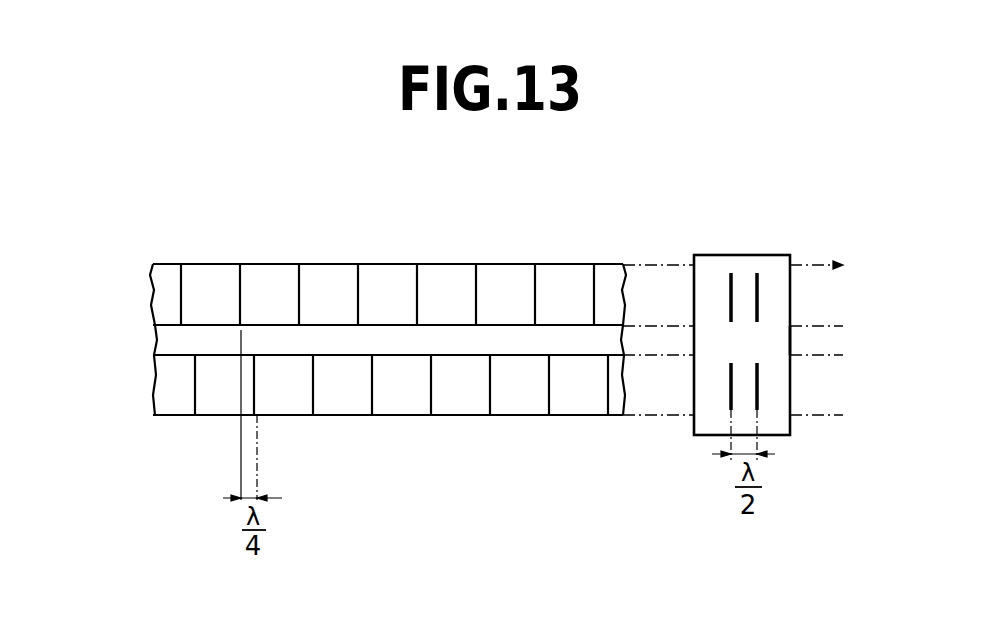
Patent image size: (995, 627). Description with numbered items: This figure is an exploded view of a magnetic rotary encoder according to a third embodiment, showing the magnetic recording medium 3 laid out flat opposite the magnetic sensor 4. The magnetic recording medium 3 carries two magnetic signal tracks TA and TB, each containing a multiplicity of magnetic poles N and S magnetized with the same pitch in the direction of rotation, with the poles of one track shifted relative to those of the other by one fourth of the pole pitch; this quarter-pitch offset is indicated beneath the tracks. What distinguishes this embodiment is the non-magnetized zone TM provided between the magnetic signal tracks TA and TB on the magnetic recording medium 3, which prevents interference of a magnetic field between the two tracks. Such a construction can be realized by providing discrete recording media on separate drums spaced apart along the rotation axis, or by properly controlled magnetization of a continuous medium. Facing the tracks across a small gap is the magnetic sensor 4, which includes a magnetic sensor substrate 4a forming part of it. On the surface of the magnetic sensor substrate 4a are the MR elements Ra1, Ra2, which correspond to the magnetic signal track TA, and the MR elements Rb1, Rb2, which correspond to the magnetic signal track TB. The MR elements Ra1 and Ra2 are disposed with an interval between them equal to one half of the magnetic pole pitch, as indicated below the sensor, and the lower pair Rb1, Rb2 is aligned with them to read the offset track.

The magnetic recording medium 3 is at (213, 264).
The magnetic signal track TA is at (153, 298).
The non-magnetized zone TM is at (157, 340).
The magnetic signal track TB is at (155, 386).
The magnetic sensor 4 is at (800, 253).
The magnetic sensor substrate 4a is at (790, 340).
The MR element Ra1 is at (731, 283).
The MR element Ra2 is at (757, 283).
The MR element Rb1 is at (731, 393).
The MR element Rb2 is at (757, 393).